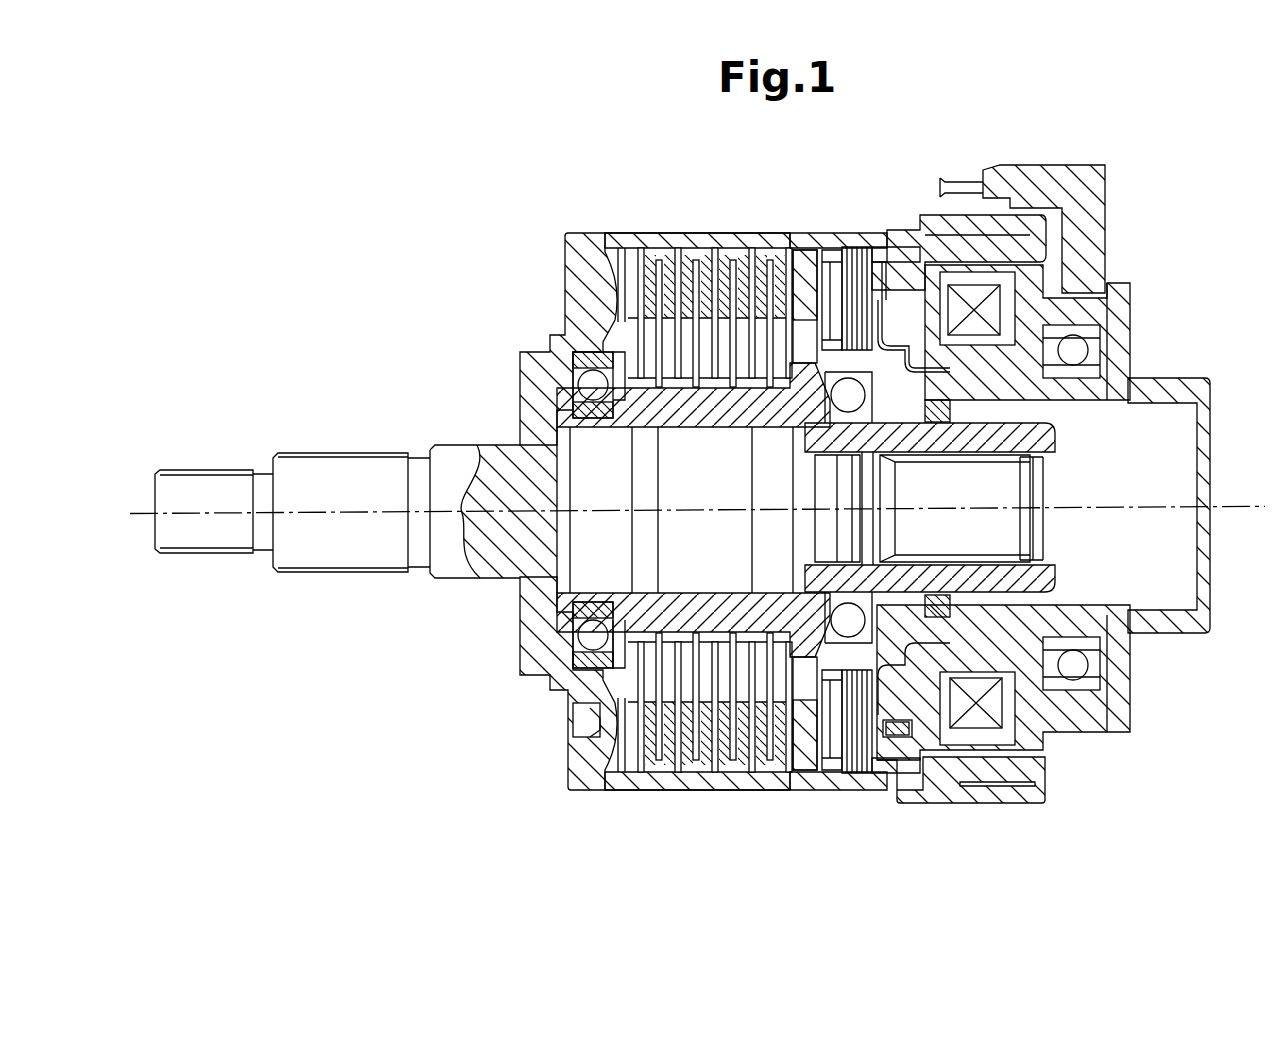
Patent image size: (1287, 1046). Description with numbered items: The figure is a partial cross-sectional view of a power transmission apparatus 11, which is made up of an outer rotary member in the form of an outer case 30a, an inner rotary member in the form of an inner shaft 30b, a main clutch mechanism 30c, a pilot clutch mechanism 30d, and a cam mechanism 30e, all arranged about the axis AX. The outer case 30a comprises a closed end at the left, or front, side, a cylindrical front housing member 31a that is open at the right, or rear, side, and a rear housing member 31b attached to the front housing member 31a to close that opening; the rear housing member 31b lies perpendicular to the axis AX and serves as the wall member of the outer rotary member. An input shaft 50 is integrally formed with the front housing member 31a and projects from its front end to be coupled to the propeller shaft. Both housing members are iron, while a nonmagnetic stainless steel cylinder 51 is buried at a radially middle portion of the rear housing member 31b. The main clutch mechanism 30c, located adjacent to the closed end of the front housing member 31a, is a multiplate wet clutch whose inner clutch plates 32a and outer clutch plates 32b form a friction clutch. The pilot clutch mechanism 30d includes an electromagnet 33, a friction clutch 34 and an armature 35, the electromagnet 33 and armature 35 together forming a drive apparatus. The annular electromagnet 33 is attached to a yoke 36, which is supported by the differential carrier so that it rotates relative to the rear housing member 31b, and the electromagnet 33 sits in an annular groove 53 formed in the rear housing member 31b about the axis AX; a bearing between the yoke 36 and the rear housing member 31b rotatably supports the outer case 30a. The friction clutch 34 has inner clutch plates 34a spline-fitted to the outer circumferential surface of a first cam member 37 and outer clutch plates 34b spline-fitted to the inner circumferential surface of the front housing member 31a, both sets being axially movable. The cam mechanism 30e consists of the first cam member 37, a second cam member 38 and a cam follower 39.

The power transmission apparatus 11 is at (1178, 144).
The input shaft 50 is at (203, 478).
The front housing member 31a is at (577, 232).
The rear housing member 31b is at (1015, 215).
The outer case 30a is at (638, 222).
The inner shaft 30b is at (688, 428).
The main clutch mechanism 30c is at (762, 224).
The pilot clutch mechanism 30d is at (932, 280).
The cam mechanism 30e is at (810, 438).
The inner clutch plates 32a is at (715, 395).
The outer clutch plates 32b is at (660, 262).
The electromagnet 33 is at (1002, 350).
The friction clutch 34 is at (882, 228).
The inner clutch plates 34a is at (905, 345).
The outer clutch plates 34b is at (860, 250).
The armature 35 is at (843, 250).
The yoke 36 is at (1135, 715).
The first cam member 37 is at (955, 508).
The second cam member 38 is at (787, 248).
The cam follower 39 is at (855, 548).
The cylinder 51 is at (886, 302).
The annular groove 53 is at (975, 345).
The axis AX is at (1245, 506).